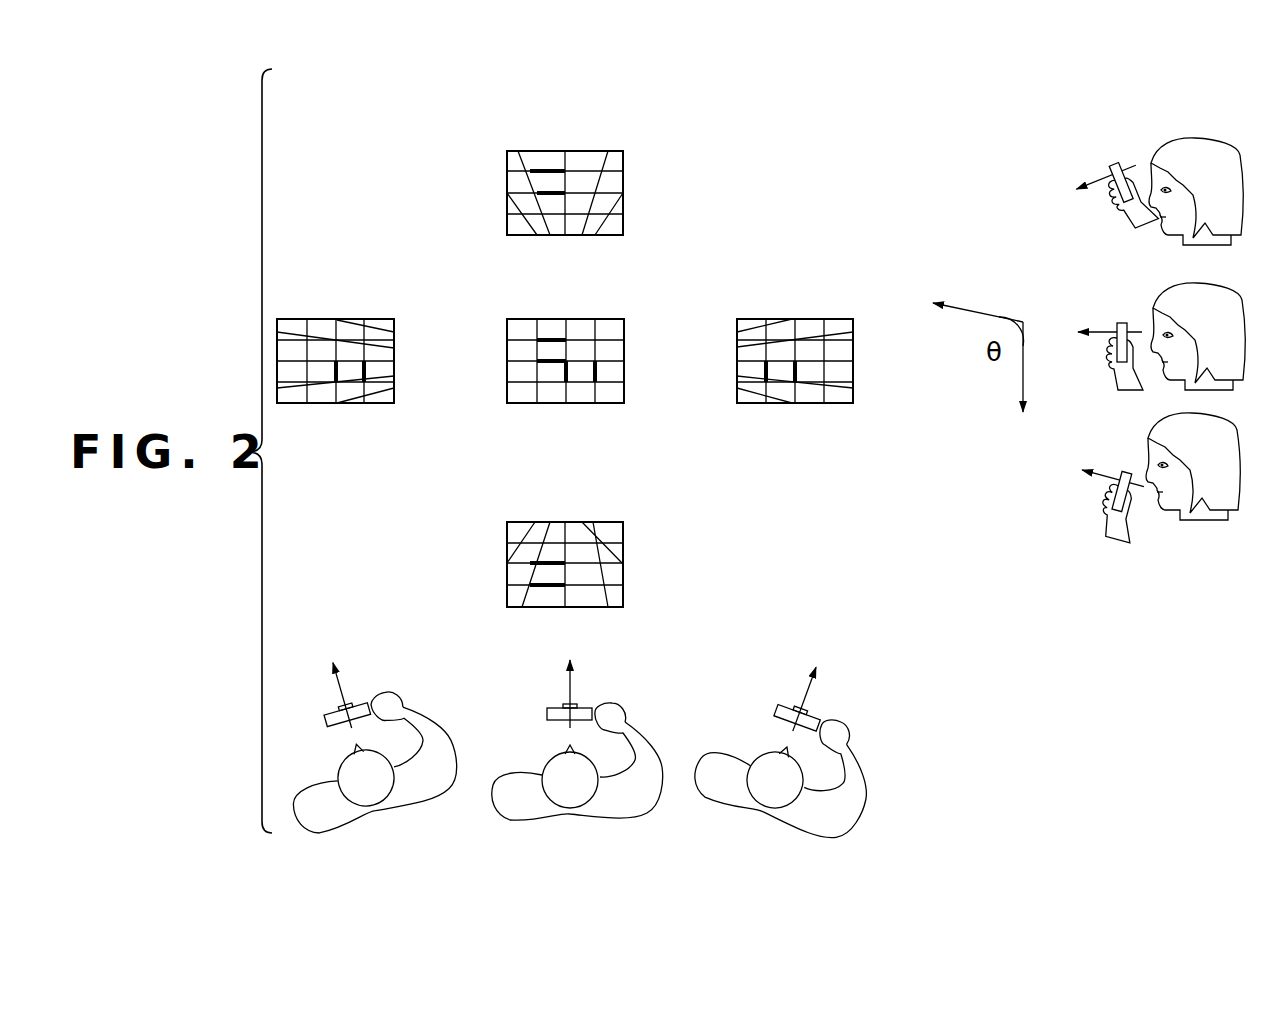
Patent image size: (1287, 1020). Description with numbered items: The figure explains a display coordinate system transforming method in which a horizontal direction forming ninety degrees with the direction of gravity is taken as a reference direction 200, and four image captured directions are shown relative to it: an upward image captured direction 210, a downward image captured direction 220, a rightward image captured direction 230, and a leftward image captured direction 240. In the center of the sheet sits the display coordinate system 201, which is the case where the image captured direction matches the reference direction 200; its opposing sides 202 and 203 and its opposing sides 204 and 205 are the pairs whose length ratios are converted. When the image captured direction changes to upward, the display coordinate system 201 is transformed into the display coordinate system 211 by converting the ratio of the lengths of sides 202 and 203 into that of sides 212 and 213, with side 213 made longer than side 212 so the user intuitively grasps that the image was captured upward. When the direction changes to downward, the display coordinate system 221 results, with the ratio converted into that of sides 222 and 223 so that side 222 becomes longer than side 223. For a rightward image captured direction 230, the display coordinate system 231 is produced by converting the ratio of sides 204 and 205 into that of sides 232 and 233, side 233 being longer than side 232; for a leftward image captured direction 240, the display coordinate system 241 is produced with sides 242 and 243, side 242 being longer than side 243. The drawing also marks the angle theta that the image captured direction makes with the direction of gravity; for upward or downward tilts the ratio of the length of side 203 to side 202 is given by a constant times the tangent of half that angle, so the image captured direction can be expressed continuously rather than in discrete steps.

The reference direction 200 is at (1114, 330).
The display coordinate system 201 is at (536, 361).
The side 202 is at (548, 361).
The side 203 is at (548, 340).
The side 204 is at (566, 372).
The side 205 is at (597, 372).
The upward image captured direction 210 is at (1118, 173).
The display coordinate system 211 is at (524, 166).
The side 212 is at (548, 193).
The side 213 is at (548, 171).
The downward image captured direction 220 is at (1117, 481).
The display coordinate system 221 is at (524, 538).
The side 222 is at (548, 585).
The side 223 is at (548, 563).
The rightward image captured direction 230 is at (810, 706).
The display coordinate system 231 is at (792, 361).
The side 232 is at (764, 372).
The side 233 is at (797, 372).
The leftward image captured direction 240 is at (365, 703).
The display coordinate system 241 is at (346, 361).
The side 242 is at (336, 372).
The side 243 is at (366, 372).